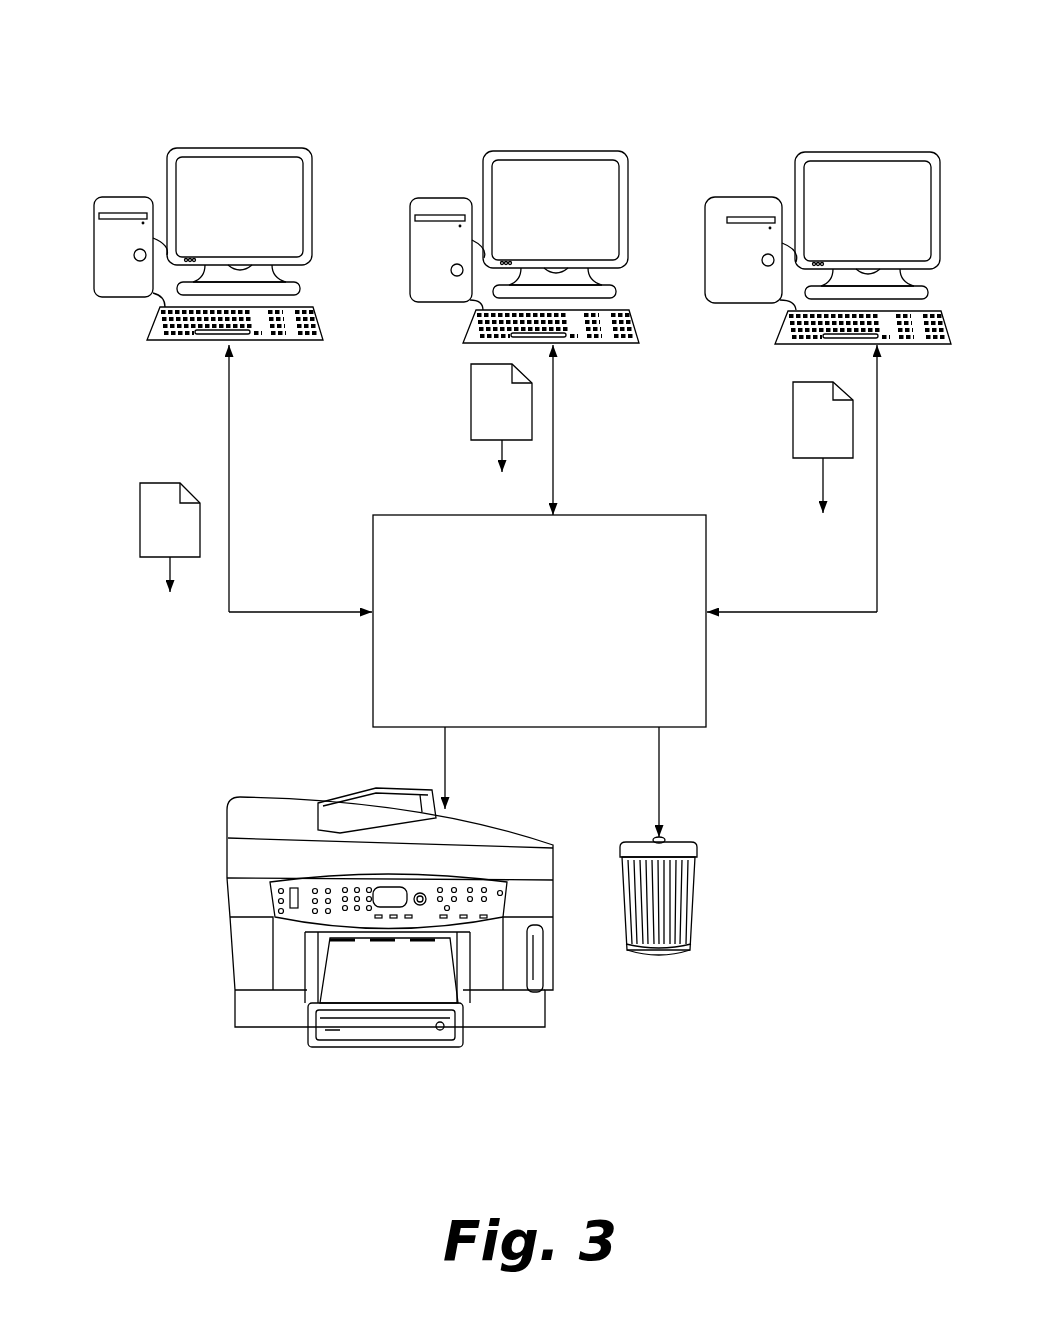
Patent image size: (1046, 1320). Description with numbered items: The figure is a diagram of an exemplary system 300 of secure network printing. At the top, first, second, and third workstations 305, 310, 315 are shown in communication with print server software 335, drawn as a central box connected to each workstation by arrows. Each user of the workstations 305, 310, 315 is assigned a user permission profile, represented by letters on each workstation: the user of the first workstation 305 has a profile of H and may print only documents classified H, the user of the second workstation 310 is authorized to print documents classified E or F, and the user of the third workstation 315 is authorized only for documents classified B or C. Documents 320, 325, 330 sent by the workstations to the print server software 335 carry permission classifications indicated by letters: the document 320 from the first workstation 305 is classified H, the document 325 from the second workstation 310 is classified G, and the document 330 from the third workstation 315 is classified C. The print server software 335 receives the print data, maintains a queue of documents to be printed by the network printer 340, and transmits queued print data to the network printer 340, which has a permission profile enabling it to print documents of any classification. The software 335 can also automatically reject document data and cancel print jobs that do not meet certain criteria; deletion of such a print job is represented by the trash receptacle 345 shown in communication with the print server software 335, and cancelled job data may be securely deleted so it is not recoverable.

The system 300 is at (136, 60).
The first workstation 305 is at (233, 178).
The second workstation 310 is at (554, 188).
The third workstation 315 is at (848, 188).
The document 320 is at (157, 517).
The document 325 is at (482, 382).
The document 330 is at (800, 410).
The print server software 335 is at (683, 716).
The network printer 340 is at (257, 955).
The trash receptacle 345 is at (718, 903).